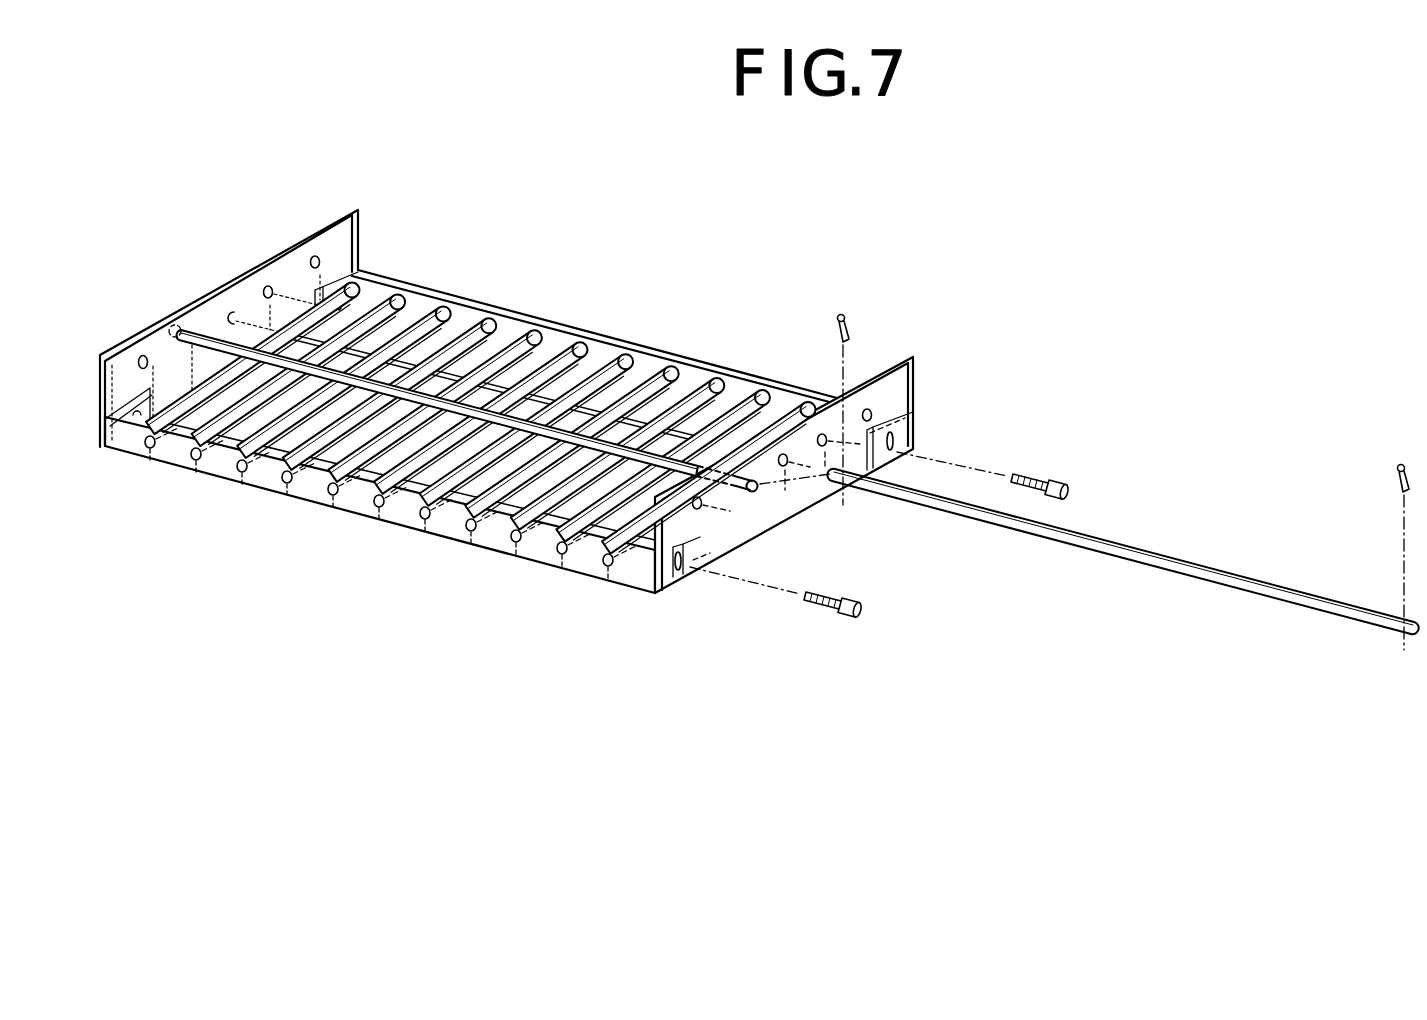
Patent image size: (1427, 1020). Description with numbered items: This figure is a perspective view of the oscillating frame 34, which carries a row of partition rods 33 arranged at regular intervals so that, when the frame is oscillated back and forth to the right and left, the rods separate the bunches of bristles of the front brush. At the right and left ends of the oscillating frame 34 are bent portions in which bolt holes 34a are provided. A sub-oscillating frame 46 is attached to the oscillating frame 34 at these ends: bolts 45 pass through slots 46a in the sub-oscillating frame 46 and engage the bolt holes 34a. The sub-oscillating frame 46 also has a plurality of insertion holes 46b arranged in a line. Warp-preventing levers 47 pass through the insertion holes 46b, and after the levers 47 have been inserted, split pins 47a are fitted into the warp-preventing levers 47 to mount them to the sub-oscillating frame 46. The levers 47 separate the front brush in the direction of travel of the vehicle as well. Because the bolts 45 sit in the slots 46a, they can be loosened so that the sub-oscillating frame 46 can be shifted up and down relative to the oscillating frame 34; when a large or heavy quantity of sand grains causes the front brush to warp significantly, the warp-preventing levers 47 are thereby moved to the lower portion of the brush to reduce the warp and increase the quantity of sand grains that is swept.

The partition rods 33 is at (652, 382).
The oscillating frame 34 is at (412, 520).
The bolt holes 34a is at (345, 296).
The bolts 45 is at (1038, 478).
The sub-oscillating frame 46 is at (252, 290).
The slots 46a is at (898, 440).
The insertion holes 46b is at (318, 258).
The warp-preventing levers 47 is at (280, 370).
The split pins 47a is at (836, 320).